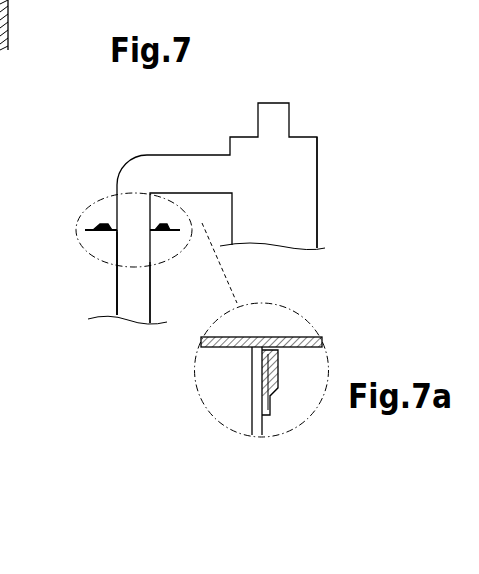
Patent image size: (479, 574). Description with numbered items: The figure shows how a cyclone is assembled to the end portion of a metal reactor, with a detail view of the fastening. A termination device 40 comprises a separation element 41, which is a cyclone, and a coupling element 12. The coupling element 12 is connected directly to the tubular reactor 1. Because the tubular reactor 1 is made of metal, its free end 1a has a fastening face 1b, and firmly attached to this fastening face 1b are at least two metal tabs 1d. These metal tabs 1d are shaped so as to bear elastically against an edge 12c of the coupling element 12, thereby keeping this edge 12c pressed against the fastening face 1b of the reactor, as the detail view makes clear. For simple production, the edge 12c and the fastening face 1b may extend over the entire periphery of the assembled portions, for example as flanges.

In FIG. 7, the termination device 40 is at (239, 181).
In FIG. 7, the separation element 41 is at (317, 180).
In FIG. 7, the coupling element 12 is at (126, 164).
In FIG. 7, the edge 12c is at (109, 218).
In FIG. 7A, the edge 12c is at (292, 340).
In FIG. 7, the tubular reactor 1 is at (116, 285).
In FIG. 7, the free end 1a is at (113, 238).
In FIG. 7, the fastening face 1b is at (97, 232).
In FIG. 7A, the fastening face 1b is at (250, 370).
In FIG. 7, the metal tabs 1d is at (95, 225).
In FIG. 7A, the metal tabs 1d is at (279, 392).